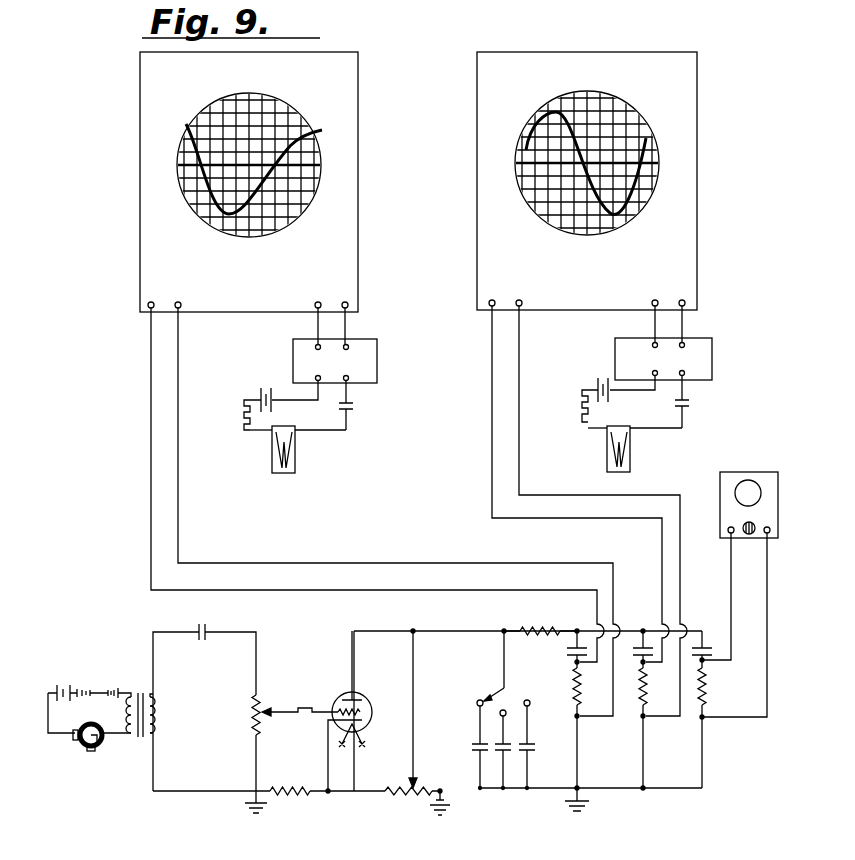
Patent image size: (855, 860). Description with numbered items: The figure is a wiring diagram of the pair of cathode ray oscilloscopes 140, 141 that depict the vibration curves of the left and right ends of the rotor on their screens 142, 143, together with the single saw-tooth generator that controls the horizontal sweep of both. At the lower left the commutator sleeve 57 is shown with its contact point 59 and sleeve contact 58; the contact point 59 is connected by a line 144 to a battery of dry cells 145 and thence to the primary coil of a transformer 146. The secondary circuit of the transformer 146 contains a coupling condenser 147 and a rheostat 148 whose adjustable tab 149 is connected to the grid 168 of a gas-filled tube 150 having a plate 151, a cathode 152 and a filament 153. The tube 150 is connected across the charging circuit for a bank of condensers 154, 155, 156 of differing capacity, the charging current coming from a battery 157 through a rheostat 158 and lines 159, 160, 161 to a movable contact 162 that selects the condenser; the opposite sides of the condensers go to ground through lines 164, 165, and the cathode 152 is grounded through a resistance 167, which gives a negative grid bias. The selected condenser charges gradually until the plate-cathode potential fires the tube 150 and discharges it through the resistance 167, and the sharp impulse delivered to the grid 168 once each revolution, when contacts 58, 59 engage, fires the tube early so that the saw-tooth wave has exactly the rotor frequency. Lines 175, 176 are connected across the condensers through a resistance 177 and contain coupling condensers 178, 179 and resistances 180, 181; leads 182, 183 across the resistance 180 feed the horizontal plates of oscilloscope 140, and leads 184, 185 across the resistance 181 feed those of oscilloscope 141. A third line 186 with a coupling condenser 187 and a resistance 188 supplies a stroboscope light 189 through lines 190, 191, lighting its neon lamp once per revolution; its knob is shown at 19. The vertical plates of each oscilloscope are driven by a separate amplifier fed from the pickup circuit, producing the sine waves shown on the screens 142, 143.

The knob 19 is at (756, 525).
The commutator sleeve 57 is at (104, 742).
The sleeve contact 58 is at (90, 752).
The contact point 59 is at (74, 745).
The oscilloscope 140 is at (146, 218).
The oscilloscope 141 is at (676, 210).
The screen 142 is at (192, 179).
The screen 143 is at (640, 119).
The line 144 is at (48, 733).
The battery of dry cells 145 is at (62, 690).
The transformer 146 is at (134, 694).
The coupling condenser 147 is at (207, 632).
The rheostat 148 is at (252, 712).
The adjustable tab 149 is at (272, 711).
The tube 150 is at (340, 698).
The plate 151 is at (358, 700).
The cathode 152 is at (364, 720).
The filament 153 is at (364, 736).
The condenser 154 is at (478, 748).
The condenser 155 is at (496, 744).
The condenser 156 is at (530, 752).
The battery 157 is at (452, 808).
The rheostat 158 is at (410, 796).
The line 159 is at (415, 678).
The line 160 is at (442, 630).
The line 161 is at (504, 668).
The movable contact 162 is at (500, 698).
The line 164 is at (562, 792).
The line 165 is at (590, 806).
The resistance 167 is at (310, 796).
The grid 168 is at (362, 712).
The line 175 is at (579, 745).
The line 176 is at (645, 749).
The resistance 177 is at (518, 630).
The coupling condenser 178 is at (568, 657).
The coupling condenser 179 is at (636, 660).
The resistance 180 is at (574, 690).
The resistance 181 is at (646, 690).
The lead 182 is at (428, 600).
The lead 183 is at (450, 552).
The lead 184 is at (662, 544).
The lead 185 is at (681, 566).
The line 186 is at (705, 745).
The coupling condenser 187 is at (708, 644).
The resistance 188 is at (706, 688).
The stroboscope light 189 is at (758, 471).
The line 190 is at (745, 584).
The line 191 is at (768, 600).